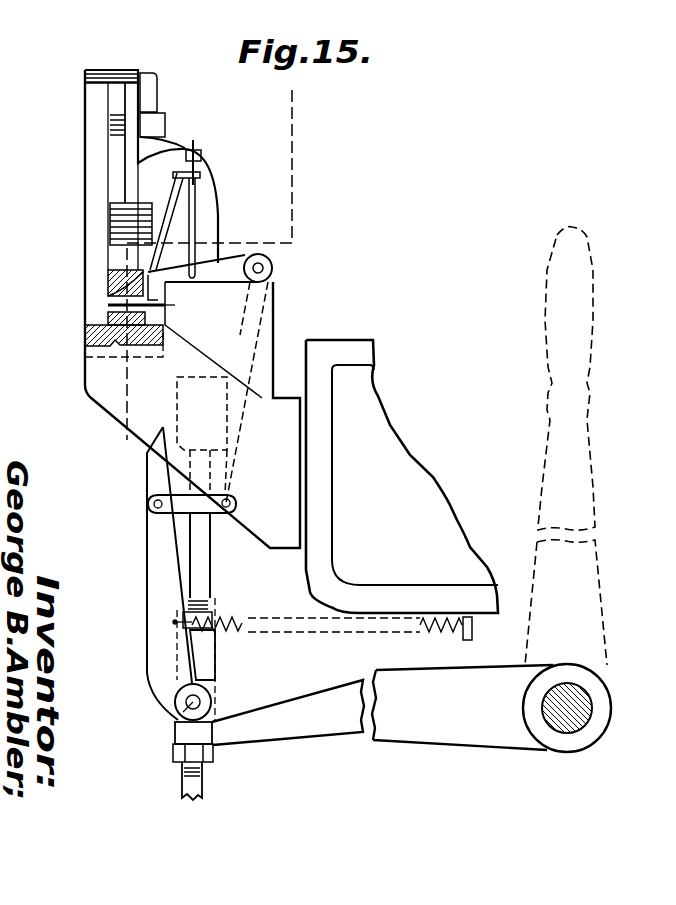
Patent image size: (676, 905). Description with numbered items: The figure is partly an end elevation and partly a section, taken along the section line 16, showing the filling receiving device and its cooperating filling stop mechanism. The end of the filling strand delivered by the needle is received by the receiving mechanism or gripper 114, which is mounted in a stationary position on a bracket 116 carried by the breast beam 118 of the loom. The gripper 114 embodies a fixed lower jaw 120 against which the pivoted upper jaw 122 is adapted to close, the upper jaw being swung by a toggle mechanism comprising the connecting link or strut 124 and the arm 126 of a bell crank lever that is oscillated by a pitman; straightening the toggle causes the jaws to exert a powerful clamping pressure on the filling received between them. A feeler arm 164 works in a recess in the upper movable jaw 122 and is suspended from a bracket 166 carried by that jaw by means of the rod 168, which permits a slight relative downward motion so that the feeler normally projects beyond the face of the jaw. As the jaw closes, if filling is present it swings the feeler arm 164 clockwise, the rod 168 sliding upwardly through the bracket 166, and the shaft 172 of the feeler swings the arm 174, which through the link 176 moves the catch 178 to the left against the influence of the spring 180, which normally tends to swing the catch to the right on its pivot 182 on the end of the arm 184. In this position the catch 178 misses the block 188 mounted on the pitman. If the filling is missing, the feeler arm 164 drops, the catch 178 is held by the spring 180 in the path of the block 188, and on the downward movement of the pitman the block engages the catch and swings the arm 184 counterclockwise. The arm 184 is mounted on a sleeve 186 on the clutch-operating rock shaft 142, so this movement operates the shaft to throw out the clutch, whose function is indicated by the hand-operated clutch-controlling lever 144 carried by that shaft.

The section line 16 is at (285, 91).
The receiving mechanism 114 is at (68, 270).
The bracket 116 is at (147, 426).
The breast beam 118 is at (370, 388).
The fixed lower jaw 120 is at (90, 340).
The pivoted upper jaw 122 is at (110, 275).
The connecting link or strut 124 is at (120, 245).
The arm of bell crank lever 126 is at (130, 172).
The rock shaft 142 is at (587, 695).
The hand-operated clutch-controlling lever 144 is at (547, 282).
The feeler arm 164 is at (233, 262).
The bracket 166 is at (205, 177).
The rod 168 is at (195, 205).
The shaft 172 is at (263, 268).
The arm 174 is at (262, 326).
The link 176 is at (162, 511).
The catch 178 is at (150, 575).
The spring 180 is at (237, 618).
The pivot 182 is at (178, 716).
The arm 184 is at (438, 735).
The sleeve 186 is at (605, 722).
The block 188 is at (177, 410).